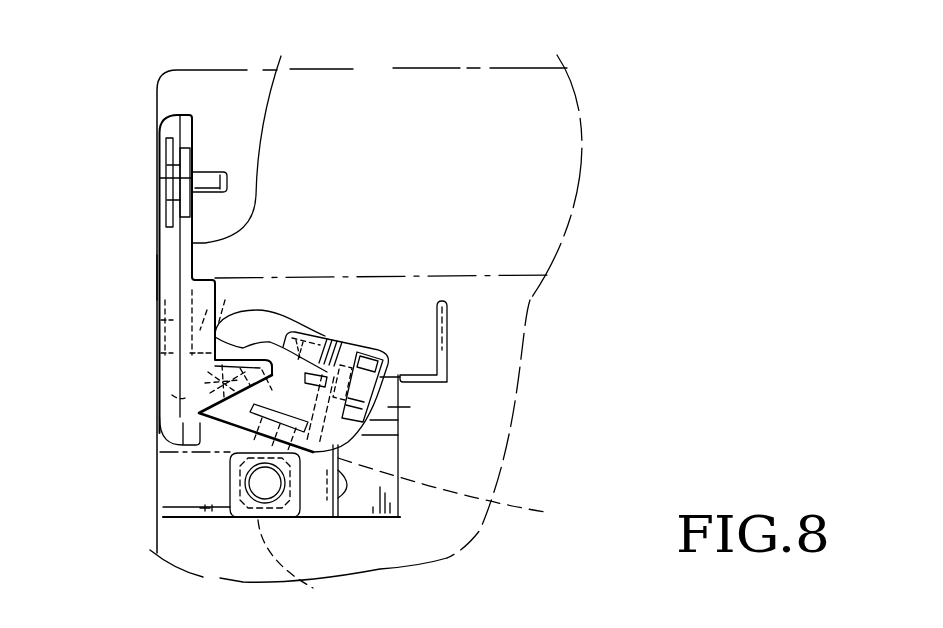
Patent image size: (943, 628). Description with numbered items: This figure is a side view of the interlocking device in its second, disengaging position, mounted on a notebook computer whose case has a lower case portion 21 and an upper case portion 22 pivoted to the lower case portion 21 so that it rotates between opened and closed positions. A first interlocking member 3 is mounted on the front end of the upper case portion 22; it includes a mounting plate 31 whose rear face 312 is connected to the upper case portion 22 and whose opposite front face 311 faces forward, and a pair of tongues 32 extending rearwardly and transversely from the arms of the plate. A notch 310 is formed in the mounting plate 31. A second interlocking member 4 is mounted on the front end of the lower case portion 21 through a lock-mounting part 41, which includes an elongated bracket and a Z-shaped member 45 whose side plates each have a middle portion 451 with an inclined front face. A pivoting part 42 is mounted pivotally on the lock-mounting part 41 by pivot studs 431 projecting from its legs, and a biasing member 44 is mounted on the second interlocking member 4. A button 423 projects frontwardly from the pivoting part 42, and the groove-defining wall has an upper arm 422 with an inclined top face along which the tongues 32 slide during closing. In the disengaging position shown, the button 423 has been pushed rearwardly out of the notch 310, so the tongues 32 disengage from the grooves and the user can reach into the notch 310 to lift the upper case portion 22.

The first interlocking member 3 is at (148, 117).
The mounting plate 31 is at (160, 242).
The front face 311 is at (157, 263).
The rear face 312 is at (256, 141).
The tongues 32 is at (247, 372).
The notch 310 is at (170, 398).
The second interlocking member 4 is at (363, 519).
The lock-mounting part 41 is at (387, 407).
The pivoting part 42 is at (367, 343).
The upper arm 422 is at (310, 340).
The button 423 is at (233, 323).
The pivot studs 431 is at (262, 482).
The biasing member 44 is at (301, 564).
The Z-shaped member 45 is at (343, 455).
The middle portion 451 is at (462, 494).
The lower case portion 21 is at (477, 387).
The upper case portion 22 is at (517, 127).